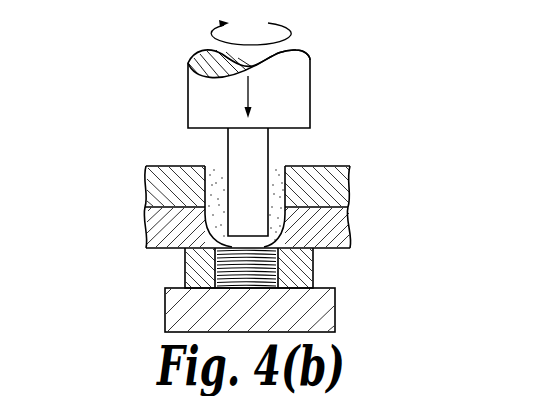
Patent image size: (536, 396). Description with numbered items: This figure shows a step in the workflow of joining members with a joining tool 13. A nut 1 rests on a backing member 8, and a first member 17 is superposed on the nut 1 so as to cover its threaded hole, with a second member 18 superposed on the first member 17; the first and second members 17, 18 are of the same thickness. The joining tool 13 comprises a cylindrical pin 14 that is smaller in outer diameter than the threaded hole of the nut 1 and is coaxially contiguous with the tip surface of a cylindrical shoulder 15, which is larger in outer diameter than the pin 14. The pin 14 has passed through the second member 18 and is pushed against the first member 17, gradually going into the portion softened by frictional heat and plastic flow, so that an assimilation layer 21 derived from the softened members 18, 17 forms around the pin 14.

The joining tool 13 is at (182, 96).
The cylindrical shoulder 15 is at (302, 79).
The cylindrical pin 14 is at (269, 150).
The assimilation layer 21 is at (205, 166).
The second member 18 is at (351, 196).
The first member 17 is at (146, 228).
The nut 1 is at (314, 268).
The backing member 8 is at (165, 311).